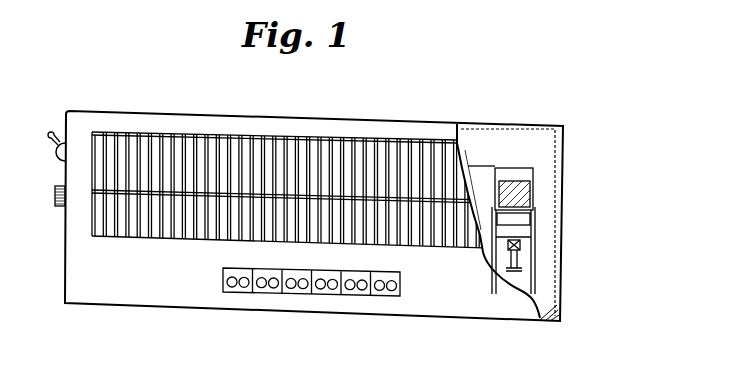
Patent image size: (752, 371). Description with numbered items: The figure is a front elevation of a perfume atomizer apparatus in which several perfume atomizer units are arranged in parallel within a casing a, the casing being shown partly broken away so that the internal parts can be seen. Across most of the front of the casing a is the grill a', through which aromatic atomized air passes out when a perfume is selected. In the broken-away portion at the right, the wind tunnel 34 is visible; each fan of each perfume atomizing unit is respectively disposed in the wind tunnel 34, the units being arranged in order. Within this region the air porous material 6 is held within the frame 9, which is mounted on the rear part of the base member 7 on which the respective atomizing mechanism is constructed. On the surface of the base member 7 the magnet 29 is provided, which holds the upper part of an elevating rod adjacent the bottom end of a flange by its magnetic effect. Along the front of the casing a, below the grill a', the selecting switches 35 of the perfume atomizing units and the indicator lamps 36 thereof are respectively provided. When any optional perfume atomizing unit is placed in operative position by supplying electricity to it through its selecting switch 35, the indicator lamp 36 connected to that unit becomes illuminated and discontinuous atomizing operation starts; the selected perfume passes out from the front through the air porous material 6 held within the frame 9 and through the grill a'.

The casing a is at (305, 201).
The grill a' is at (288, 167).
The wind tunnel 34 is at (486, 172).
The air porous material 6 is at (522, 193).
The frame 9 is at (531, 219).
The base member 7 is at (535, 238).
The magnet 29 is at (518, 252).
The selecting switch 35 is at (231, 287).
The indicator lamp 36 is at (244, 287).